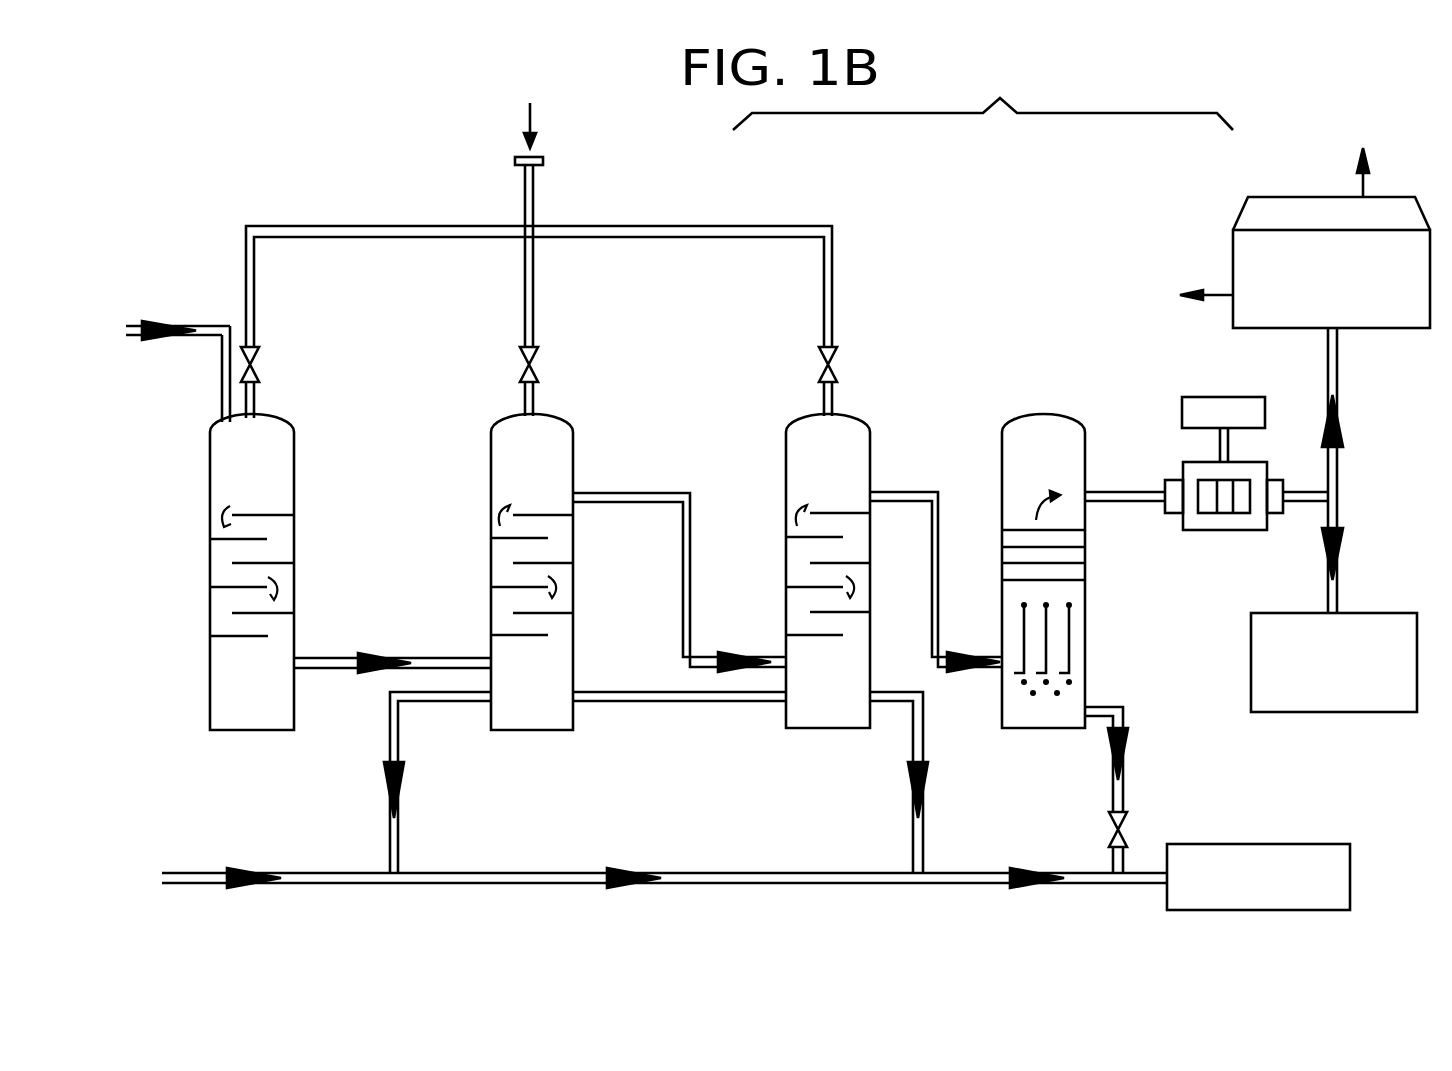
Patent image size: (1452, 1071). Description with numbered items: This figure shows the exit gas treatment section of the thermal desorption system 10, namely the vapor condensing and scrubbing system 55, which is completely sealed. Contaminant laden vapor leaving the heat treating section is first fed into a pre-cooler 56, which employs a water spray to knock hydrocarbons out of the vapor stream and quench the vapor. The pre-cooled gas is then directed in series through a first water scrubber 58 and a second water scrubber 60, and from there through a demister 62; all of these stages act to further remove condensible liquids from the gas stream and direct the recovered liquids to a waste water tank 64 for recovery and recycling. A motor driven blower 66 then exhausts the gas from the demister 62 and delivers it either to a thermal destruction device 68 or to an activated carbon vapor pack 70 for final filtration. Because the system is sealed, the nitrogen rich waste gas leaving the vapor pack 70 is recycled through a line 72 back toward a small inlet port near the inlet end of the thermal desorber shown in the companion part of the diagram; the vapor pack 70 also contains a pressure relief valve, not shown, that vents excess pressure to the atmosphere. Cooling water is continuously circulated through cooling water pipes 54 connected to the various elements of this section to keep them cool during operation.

The thermal desorption system 10 is at (251, 134).
The cooling water pipes 54 is at (786, 877).
The vapor condensing and scrubbing system 55 is at (983, 97).
The pre-cooler 56 is at (280, 463).
The first water scrubber 58 is at (565, 455).
The second water scrubber 60 is at (853, 452).
The demister 62 is at (1047, 432).
The waste water tank 64 is at (1275, 843).
The motor driven blower 66 is at (1195, 473).
The thermal destruction device 68 is at (1388, 640).
The activated carbon vapor pack 70 is at (1408, 270).
The line 72 is at (1228, 295).